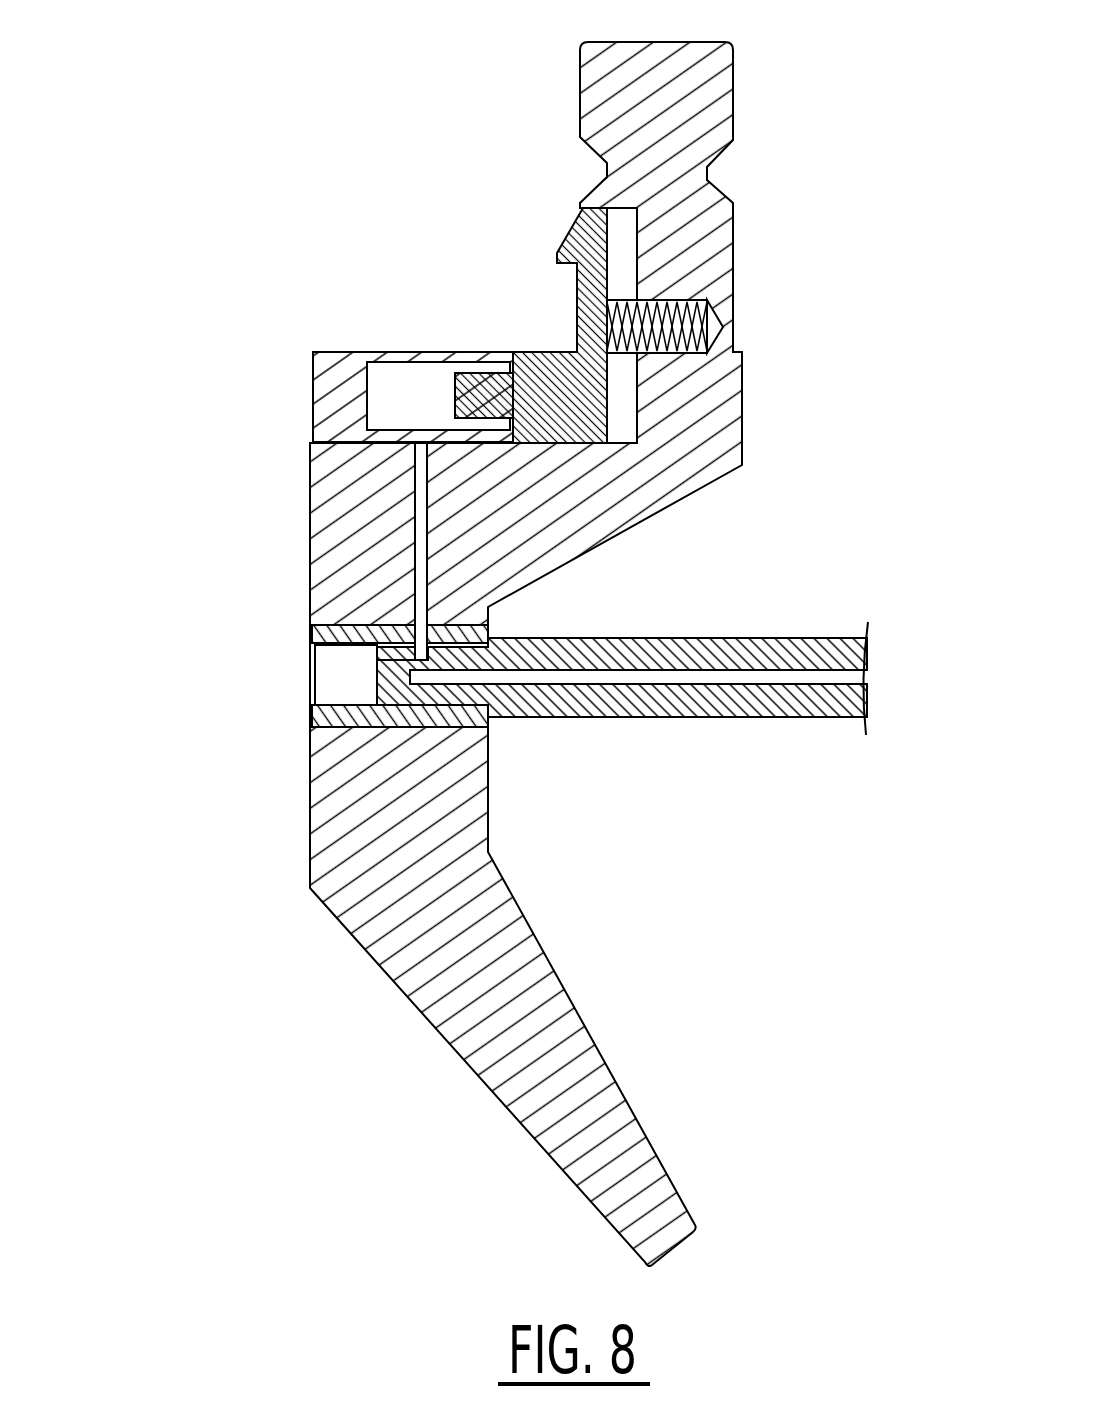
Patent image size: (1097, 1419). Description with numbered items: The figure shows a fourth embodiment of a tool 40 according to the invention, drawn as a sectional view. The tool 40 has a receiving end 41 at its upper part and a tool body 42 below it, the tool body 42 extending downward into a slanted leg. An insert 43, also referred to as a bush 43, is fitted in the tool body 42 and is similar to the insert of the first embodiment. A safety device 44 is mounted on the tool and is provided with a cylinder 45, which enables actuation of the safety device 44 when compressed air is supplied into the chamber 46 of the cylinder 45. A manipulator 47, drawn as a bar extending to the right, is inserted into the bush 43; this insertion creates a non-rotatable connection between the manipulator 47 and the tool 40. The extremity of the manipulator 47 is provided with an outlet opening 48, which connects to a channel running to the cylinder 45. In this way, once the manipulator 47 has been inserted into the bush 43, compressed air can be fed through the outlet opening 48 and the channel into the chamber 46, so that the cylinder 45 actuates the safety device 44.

The tool 40 is at (172, 704).
The receiving end 41 is at (722, 92).
The tool body 42 is at (465, 800).
The insert 43 is at (328, 633).
The safety device 44 is at (588, 292).
The cylinder 45 is at (333, 385).
The chamber 46 is at (400, 373).
The manipulator 47 is at (698, 655).
The outlet opening 48 is at (418, 658).